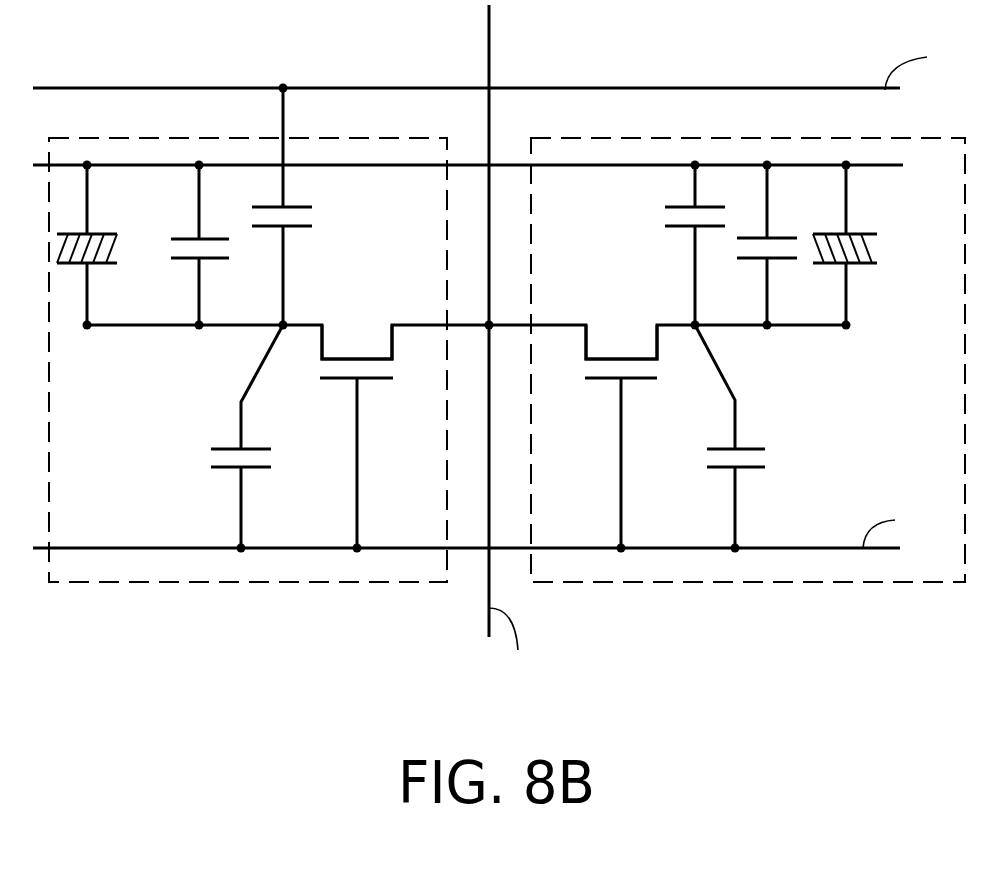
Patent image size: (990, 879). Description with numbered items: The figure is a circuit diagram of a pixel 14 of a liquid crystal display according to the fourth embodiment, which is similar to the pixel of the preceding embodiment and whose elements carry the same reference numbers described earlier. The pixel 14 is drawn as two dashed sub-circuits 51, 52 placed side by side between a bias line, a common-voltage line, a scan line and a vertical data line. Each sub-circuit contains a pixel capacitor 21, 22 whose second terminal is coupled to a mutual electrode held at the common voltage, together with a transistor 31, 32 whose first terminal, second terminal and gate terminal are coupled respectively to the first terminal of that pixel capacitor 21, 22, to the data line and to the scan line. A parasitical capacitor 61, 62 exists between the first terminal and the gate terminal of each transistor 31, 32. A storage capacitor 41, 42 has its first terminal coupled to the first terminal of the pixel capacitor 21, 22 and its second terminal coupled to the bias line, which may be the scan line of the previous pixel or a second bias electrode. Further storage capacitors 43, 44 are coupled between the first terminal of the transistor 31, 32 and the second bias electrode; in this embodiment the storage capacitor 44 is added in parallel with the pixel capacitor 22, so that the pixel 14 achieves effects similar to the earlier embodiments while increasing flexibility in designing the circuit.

The pixel 14 is at (934, 681).
The first sub-pixel circuit 51 is at (78, 137).
The second sub-pixel circuit 52 is at (587, 137).
The pixel capacitor 21 is at (117, 248).
The pixel capacitor 22 is at (885, 245).
The transistor 31 is at (357, 338).
The transistor 32 is at (620, 338).
The storage capacitor 41 is at (313, 215).
The storage capacitor 42 is at (665, 217).
The storage capacitor 43 is at (187, 238).
The storage capacitor 44 is at (778, 238).
The parasitical capacitor 61 is at (273, 458).
The parasitical capacitor 62 is at (808, 457).